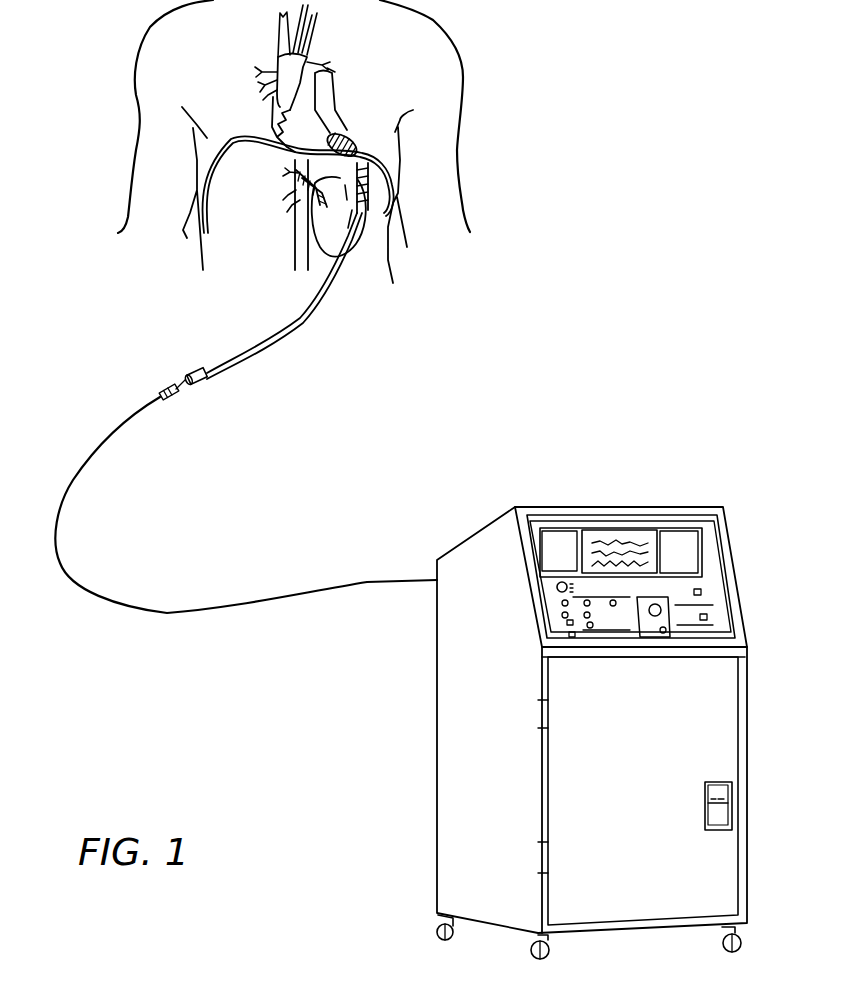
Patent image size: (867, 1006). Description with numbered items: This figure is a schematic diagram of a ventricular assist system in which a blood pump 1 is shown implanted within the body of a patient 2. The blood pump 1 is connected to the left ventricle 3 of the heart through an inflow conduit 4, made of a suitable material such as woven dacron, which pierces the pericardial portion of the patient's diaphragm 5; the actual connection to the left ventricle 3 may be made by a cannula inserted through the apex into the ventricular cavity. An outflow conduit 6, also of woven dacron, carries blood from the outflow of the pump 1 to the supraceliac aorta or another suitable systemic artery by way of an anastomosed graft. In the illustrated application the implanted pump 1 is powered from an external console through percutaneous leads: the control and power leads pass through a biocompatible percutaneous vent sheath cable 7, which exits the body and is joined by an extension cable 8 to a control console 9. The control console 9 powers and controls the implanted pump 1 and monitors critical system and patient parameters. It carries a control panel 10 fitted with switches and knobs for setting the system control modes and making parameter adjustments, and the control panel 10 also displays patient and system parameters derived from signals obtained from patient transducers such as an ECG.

The blood pump 1 is at (342, 235).
The patient 2 is at (390, 253).
The left ventricle 3 is at (323, 100).
The inflow conduit 4 is at (353, 147).
The diaphragm 5 is at (247, 140).
The outflow conduit 6 is at (297, 182).
The percutaneous vent sheath cable 7 is at (312, 302).
The extension cable 8 is at (227, 610).
The control console 9 is at (643, 505).
The control panel 10 is at (710, 590).